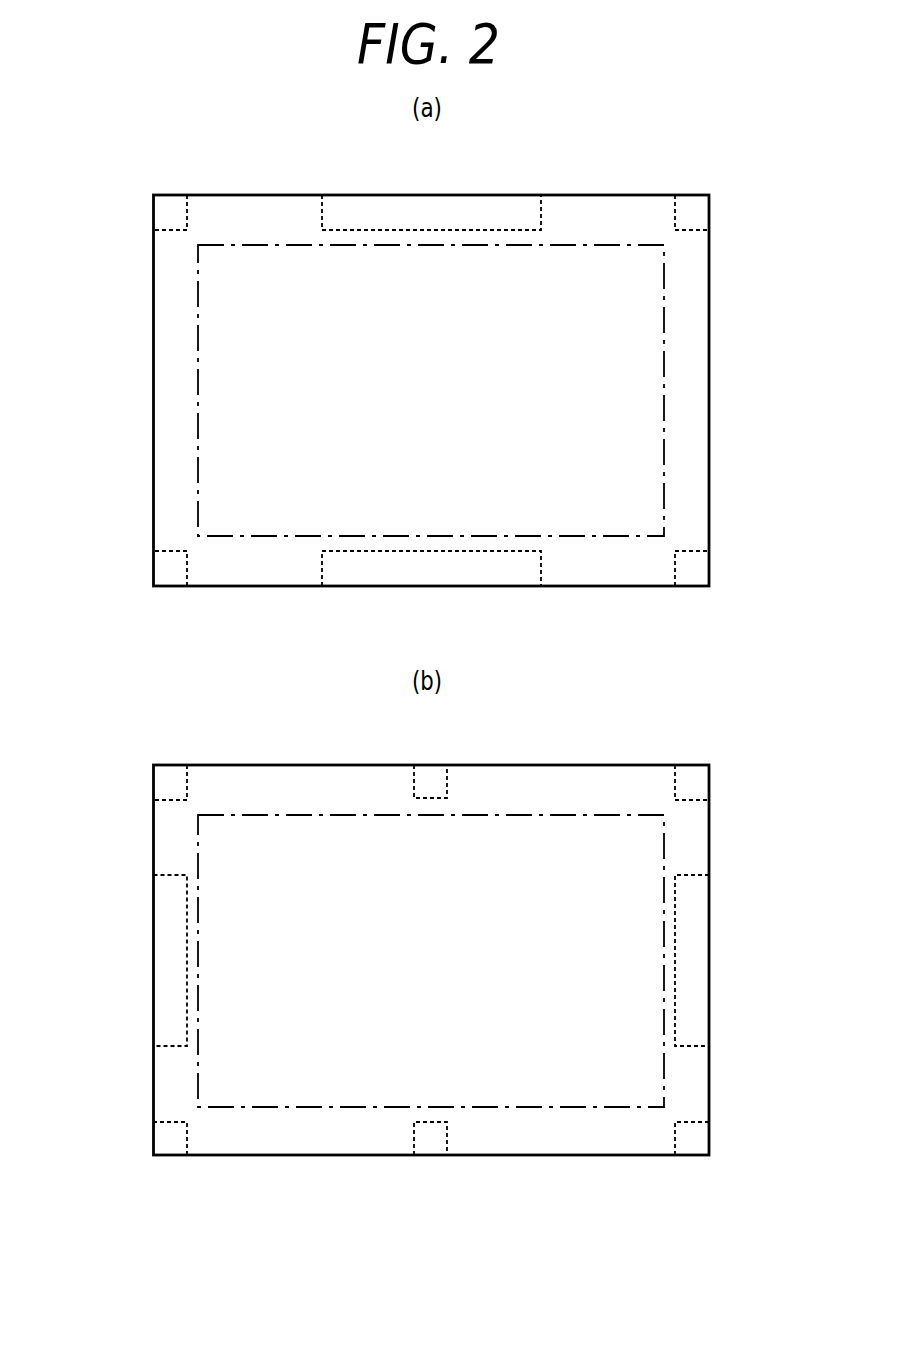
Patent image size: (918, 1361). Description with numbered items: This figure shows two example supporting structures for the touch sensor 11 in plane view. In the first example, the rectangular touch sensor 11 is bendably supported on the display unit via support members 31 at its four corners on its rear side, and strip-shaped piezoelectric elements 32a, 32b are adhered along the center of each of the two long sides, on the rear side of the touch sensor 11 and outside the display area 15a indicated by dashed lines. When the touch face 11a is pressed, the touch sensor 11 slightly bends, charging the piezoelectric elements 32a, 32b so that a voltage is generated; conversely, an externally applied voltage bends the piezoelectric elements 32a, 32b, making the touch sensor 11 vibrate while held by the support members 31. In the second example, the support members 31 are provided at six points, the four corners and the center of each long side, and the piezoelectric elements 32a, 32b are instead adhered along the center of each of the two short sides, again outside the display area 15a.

The touch sensor 11 is at (709, 347).
The touch face 11a is at (563, 335).
The display area 15a is at (664, 423).
The support member 31 is at (167, 231).
The piezoelectric element 32a is at (322, 213).
The piezoelectric element 32b is at (541, 565).